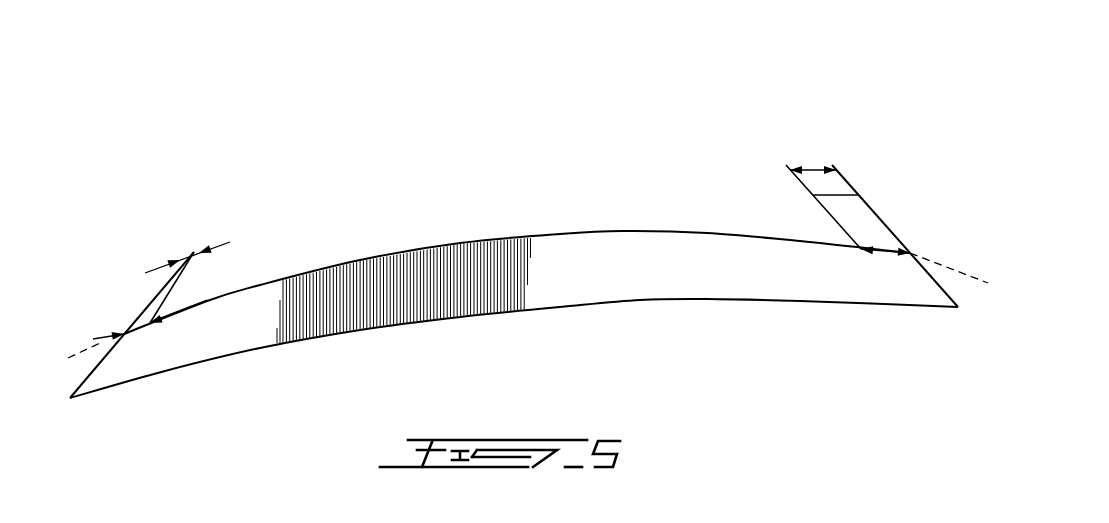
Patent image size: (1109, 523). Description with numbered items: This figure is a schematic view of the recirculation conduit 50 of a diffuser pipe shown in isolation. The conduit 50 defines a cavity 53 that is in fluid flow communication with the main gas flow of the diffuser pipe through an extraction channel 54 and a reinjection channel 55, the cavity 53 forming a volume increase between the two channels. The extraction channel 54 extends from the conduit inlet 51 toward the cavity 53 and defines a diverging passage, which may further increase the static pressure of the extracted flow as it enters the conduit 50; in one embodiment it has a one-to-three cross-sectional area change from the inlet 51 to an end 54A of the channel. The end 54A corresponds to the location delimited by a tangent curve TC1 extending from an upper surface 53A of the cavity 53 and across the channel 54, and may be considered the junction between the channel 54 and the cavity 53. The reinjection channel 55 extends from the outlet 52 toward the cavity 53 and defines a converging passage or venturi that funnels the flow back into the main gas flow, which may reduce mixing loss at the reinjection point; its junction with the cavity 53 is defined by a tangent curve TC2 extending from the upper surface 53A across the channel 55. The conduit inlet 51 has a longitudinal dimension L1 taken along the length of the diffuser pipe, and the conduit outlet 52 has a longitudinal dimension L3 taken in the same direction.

The recirculation conduit 50 is at (530, 201).
The conduit inlet 51 is at (838, 193).
The conduit outlet 52 is at (192, 256).
The cavity 53 is at (668, 272).
The upper surface of the cavity 53A is at (720, 232).
The extraction channel 54 is at (865, 217).
The end of the extraction channel 54A is at (914, 250).
The reinjection channel 55 is at (158, 293).
The longitudinal dimension of the conduit inlet L1 is at (813, 168).
The longitudinal dimension of the conduit outlet L3 is at (225, 243).
The tangent curve TC1 is at (951, 272).
The tangent curve TC2 is at (80, 346).